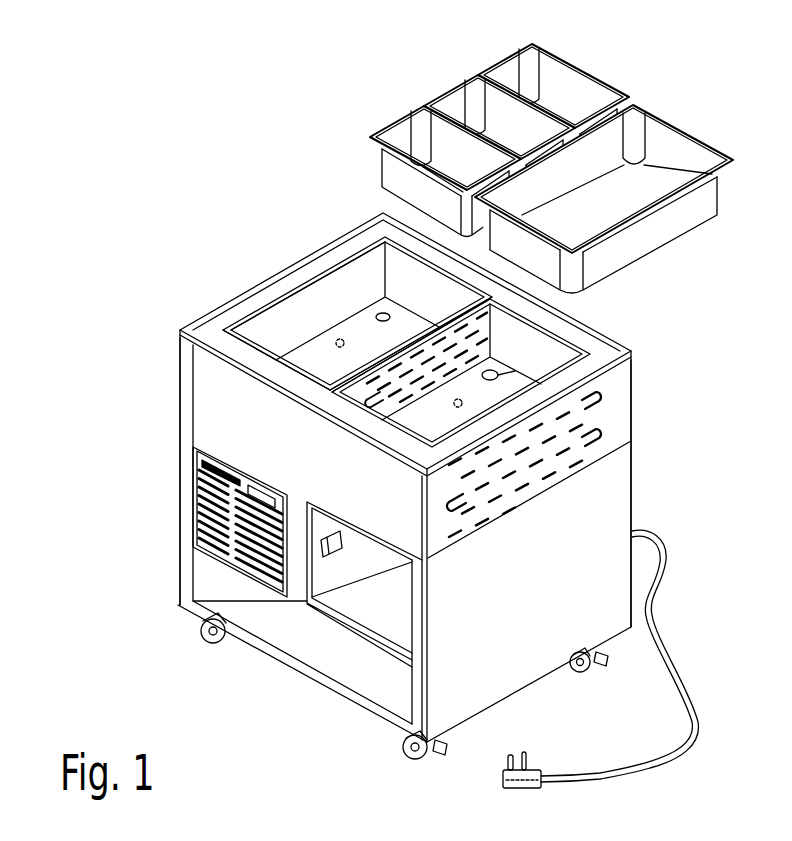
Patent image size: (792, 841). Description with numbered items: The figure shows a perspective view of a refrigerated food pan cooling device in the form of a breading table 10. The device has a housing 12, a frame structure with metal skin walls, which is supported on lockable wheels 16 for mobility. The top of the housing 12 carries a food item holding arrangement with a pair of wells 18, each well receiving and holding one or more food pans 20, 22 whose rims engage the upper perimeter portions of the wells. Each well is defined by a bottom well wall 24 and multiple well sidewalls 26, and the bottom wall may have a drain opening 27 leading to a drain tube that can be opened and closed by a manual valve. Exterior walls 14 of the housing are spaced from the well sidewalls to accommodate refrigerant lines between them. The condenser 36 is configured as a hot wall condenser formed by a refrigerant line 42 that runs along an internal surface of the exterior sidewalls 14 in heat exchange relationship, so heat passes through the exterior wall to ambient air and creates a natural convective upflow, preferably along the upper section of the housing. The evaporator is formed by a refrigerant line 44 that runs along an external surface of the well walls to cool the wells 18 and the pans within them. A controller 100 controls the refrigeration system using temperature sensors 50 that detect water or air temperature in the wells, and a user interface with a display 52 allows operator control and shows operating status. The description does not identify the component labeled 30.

The breading table 10 is at (253, 118).
The housing 12 is at (213, 303).
The exterior walls 14 is at (205, 405).
The lockable wheels 16 is at (208, 640).
The wells 18 is at (333, 290).
The food pan 20 is at (690, 134).
The food pan 22 is at (401, 117).
The bottom well wall 24 is at (320, 364).
The well sidewalls 26 is at (387, 260).
The drain opening 27 is at (507, 368).
The refrigeration unit 30 is at (176, 541).
The condenser 36 is at (618, 401).
The refrigerant line 42 is at (568, 463).
The refrigerant line 44 is at (369, 395).
The temperature sensors 50 is at (338, 343).
The display 52 is at (262, 492).
The controller 100 is at (335, 555).